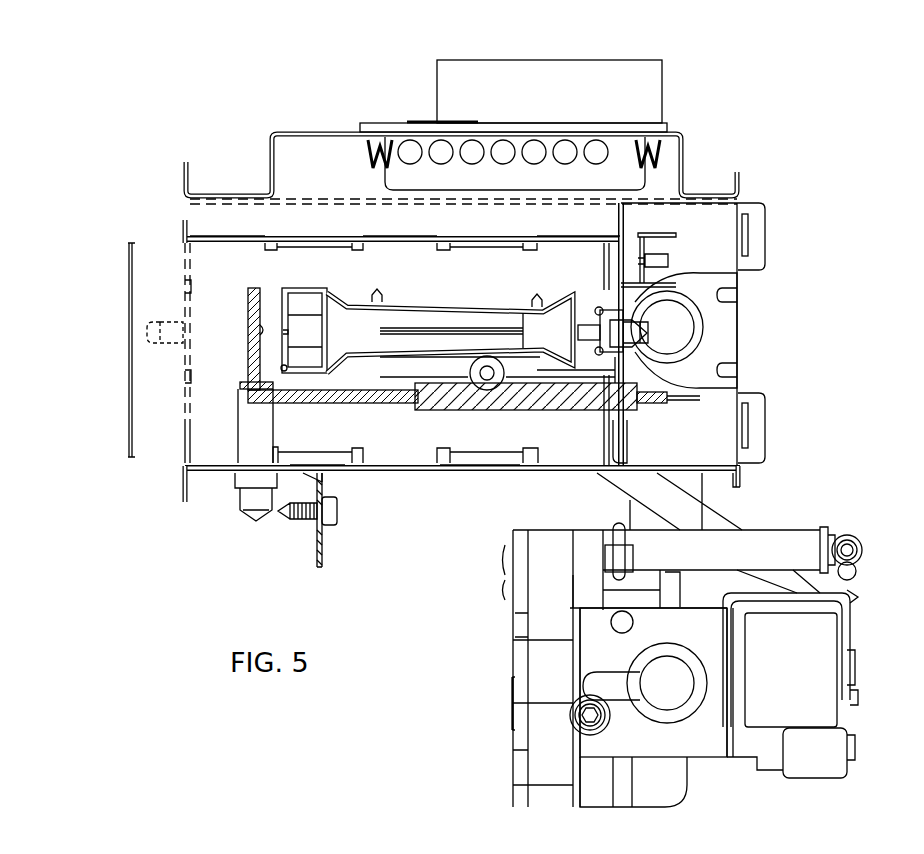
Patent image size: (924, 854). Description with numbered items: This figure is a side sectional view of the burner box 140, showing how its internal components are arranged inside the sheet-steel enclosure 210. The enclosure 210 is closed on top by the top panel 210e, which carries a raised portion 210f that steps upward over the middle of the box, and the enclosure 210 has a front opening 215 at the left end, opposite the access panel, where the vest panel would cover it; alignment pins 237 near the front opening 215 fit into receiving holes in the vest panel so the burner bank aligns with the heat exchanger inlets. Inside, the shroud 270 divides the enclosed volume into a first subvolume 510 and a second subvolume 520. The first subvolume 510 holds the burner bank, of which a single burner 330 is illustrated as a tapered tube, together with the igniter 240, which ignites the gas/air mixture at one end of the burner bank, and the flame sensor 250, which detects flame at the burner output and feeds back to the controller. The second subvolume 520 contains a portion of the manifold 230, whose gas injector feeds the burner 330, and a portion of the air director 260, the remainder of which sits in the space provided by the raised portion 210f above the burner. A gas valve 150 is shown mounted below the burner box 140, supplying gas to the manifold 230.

The burner box 140 is at (849, 136).
The gas valve 150 is at (512, 663).
The enclosure 210 is at (155, 236).
The top panel 210e is at (182, 170).
The raised portion 210f is at (318, 131).
The front opening 215 is at (130, 342).
The manifold 230 is at (703, 314).
The alignment pins 237 is at (170, 320).
The igniter 240 is at (274, 421).
The flame sensor 250 is at (252, 287).
The air director 260 is at (663, 93).
The shroud 270 is at (395, 249).
The burner 330 is at (479, 300).
The first subvolume 510 is at (585, 273).
The second subvolume 520 is at (725, 239).